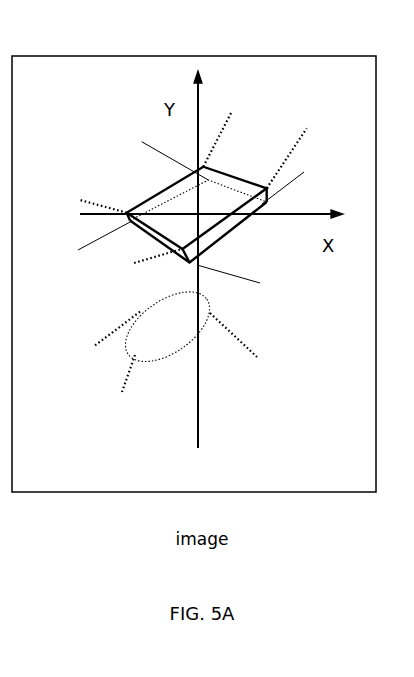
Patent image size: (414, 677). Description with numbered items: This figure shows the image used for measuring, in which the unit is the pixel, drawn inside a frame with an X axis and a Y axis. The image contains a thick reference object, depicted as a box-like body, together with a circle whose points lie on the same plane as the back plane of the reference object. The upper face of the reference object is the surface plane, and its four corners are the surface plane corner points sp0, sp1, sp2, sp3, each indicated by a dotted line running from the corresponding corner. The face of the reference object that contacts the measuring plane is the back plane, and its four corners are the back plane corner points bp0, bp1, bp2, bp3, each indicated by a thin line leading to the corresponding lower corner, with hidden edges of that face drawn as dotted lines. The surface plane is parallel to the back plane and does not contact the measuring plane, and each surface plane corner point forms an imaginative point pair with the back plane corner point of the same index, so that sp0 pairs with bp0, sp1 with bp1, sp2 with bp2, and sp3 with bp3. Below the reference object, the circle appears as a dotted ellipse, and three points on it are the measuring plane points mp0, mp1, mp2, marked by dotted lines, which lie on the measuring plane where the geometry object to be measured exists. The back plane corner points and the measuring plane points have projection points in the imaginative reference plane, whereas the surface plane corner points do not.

The surface plane corner point sp0 is at (239, 138).
The surface plane corner point sp1 is at (308, 158).
The surface plane corner point sp2 is at (134, 270).
The surface plane corner point sp3 is at (82, 213).
The back plane corner point bp0 is at (151, 161).
The back plane corner point bp1 is at (305, 188).
The back plane corner point bp2 is at (250, 287).
The back plane corner point bp3 is at (82, 248).
The measuring plane point mp0 is at (258, 347).
The measuring plane point mp1 is at (103, 387).
The measuring plane point mp2 is at (90, 343).